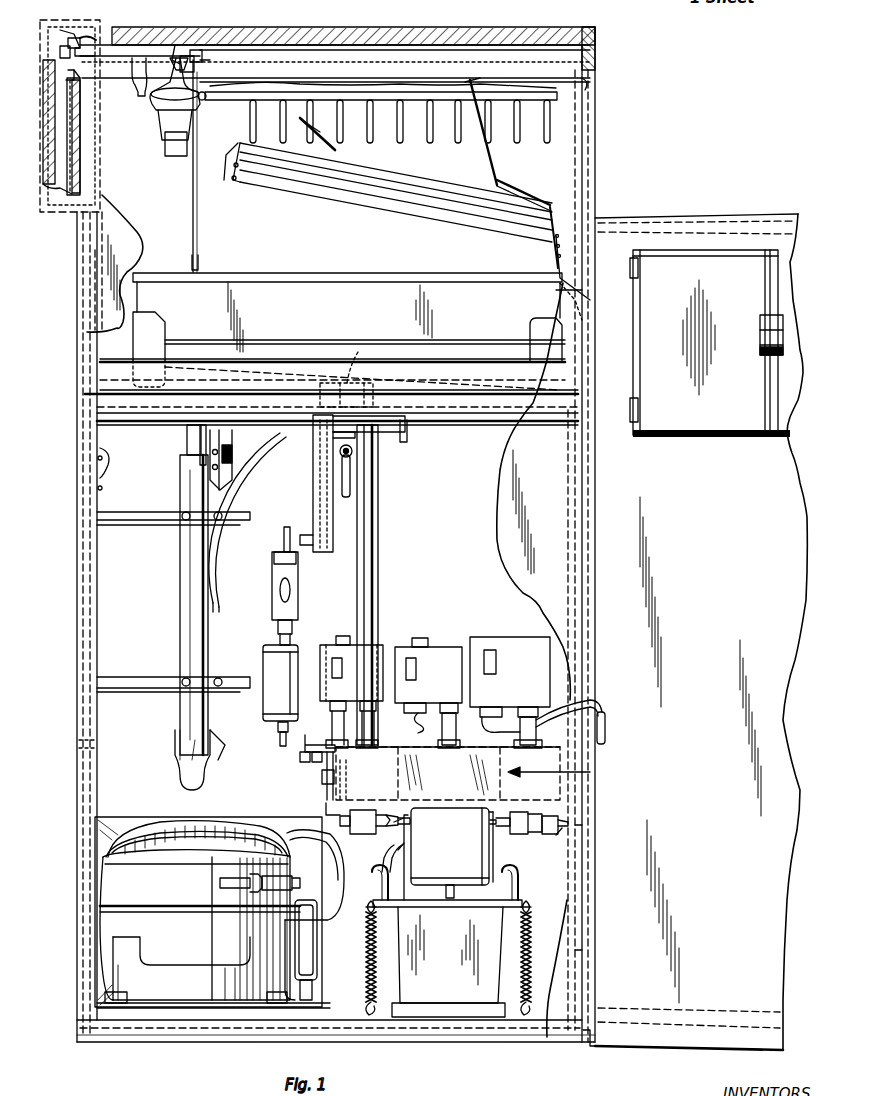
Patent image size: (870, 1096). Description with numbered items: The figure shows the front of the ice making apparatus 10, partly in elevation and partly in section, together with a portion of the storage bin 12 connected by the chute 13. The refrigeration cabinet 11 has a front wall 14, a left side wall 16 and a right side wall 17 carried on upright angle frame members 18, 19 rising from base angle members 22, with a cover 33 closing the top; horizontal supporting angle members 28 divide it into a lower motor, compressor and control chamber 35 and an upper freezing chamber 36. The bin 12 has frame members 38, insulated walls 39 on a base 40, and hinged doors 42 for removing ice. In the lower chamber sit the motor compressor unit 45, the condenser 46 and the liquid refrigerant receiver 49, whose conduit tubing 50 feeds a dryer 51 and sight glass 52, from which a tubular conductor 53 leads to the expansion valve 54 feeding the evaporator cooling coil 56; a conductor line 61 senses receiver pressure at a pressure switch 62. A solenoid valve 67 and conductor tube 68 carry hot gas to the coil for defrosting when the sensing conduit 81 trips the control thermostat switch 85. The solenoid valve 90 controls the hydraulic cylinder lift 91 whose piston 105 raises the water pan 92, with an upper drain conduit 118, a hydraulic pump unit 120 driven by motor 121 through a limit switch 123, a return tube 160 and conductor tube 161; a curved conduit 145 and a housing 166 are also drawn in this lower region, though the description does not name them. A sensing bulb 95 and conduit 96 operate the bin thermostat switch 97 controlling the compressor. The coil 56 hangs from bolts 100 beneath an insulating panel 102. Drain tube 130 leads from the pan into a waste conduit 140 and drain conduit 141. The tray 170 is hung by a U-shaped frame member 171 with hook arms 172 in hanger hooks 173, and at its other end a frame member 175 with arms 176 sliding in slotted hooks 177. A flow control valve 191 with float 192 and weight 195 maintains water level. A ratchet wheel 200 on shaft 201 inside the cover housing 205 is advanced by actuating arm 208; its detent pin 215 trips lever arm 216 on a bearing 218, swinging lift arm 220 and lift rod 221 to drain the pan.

The ice making apparatus 10 is at (598, 155).
The refrigeration cabinet 11 is at (594, 180).
The storage bin 12 is at (676, 218).
The chute 13 is at (594, 330).
The front wall 14 is at (573, 507).
The left side wall 16 is at (78, 628).
The right side wall 17 is at (596, 206).
The upright angle frame member 18 is at (82, 601).
The upright angle frame member 19 is at (574, 930).
The base angle member 22 is at (170, 1030).
The horizontal supporting angle member 28 is at (470, 418).
The cover 33 is at (578, 30).
The lower motor, compressor and control chamber 35 is at (114, 757).
The upper freezing chamber 36 is at (130, 205).
The frame members 38 is at (782, 206).
The insulated walls 39 is at (776, 764).
The base 40 is at (768, 1020).
The doors 42 is at (765, 442).
The motor compressor unit 45 is at (186, 889).
The condenser 46 is at (114, 826).
The liquid refrigerant receiver 49 is at (320, 940).
The conduit tubing 50 is at (276, 738).
The dryer 51 is at (268, 658).
The sight glass 52 is at (275, 598).
The tubular conductor 53 is at (289, 532).
The expansion valve 54 is at (173, 570).
The evaporator cooling coil 56 is at (592, 80).
The conductor line 61 is at (325, 758).
The pressure switch 62 is at (358, 660).
The solenoid valve 67 is at (358, 828).
The conductor tube 68 is at (326, 815).
The conduit 81 is at (420, 718).
The control thermostat switch 85 is at (440, 650).
The hydraulic pump control solenoid valve 90 is at (556, 835).
The hydraulic cylinder lift 91 is at (374, 512).
The water pan 92 is at (358, 292).
The sensing bulb 95 is at (608, 728).
The conduit 96 is at (594, 700).
The bin thermostat switch 97 is at (495, 640).
The bolts 100 is at (308, 78).
The panel of insulating material 102 is at (350, 70).
The piston 105 is at (368, 336).
The upper drain conduit 118 is at (348, 470).
The hydraulic pump unit 120 is at (462, 924).
The electric motor 121 is at (458, 829).
The limit switch 123 is at (230, 460).
The drain tube 130 is at (190, 440).
The waste conduit 140 is at (188, 574).
The drain conduit 141 is at (196, 772).
The curved conduit 145 is at (270, 480).
The return tube 160 is at (570, 830).
The conductor tube 161 is at (380, 848).
The housing 166 is at (404, 818).
The open work basket or tray 170 is at (300, 208).
The U-shaped frame member 171 is at (238, 185).
The hook arms 172 is at (335, 150).
The U-shaped hanger hooks 173 is at (285, 30).
The U-shaped supporting frame member 175 is at (540, 218).
The arms 176 is at (528, 193).
The slotted supporting hooks 177 is at (490, 168).
The flow control valve 191 is at (175, 40).
The float 192 is at (158, 122).
The weight 195 is at (165, 158).
The ratchet wheel 200 is at (68, 168).
The shaft 201 is at (70, 130).
The insulated cover housing 205 is at (40, 118).
The swingable actuating arm 208 is at (135, 98).
The detent pin 215 is at (64, 86).
The elongate lever arm 216 is at (58, 63).
The bearing 218 is at (128, 22).
The lift arm 220 is at (208, 50).
The lift rod 221 is at (178, 166).